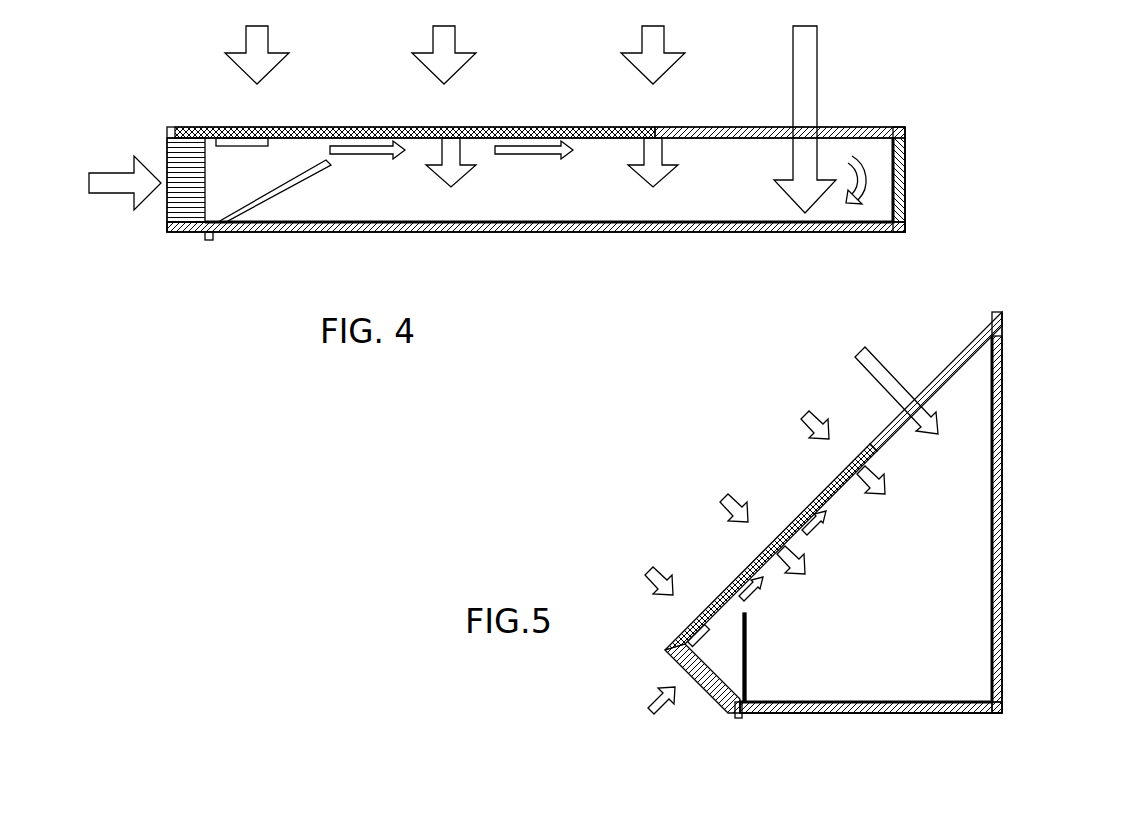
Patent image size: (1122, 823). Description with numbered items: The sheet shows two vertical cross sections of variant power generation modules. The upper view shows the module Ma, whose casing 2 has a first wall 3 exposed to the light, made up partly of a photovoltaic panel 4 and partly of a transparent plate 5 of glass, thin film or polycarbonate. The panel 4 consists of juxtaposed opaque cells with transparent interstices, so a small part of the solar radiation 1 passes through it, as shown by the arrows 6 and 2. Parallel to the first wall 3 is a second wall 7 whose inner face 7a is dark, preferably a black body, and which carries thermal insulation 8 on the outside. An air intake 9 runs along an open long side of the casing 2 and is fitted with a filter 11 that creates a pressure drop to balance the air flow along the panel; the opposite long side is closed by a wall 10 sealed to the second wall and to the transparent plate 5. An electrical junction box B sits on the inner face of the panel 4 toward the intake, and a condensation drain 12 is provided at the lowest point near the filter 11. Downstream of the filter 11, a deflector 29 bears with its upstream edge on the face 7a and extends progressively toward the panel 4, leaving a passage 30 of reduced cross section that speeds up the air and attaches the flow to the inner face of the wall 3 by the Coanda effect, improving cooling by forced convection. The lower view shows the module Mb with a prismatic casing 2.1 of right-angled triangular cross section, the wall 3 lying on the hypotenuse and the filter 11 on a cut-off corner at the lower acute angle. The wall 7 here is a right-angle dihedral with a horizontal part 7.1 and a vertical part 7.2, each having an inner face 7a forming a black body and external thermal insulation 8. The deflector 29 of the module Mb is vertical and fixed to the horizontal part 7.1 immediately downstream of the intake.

In FIG. 4, the solar radiation rays 1 is at (660, 42).
In FIG. 5, the solar radiation rays 1 is at (812, 418).
In FIG. 4, the casing 2 is at (684, 153).
In FIG. 5, the prismatic casing 2.1 is at (968, 402).
In FIG. 4, the first wall 3 is at (398, 120).
In FIG. 5, the first wall 3 is at (803, 507).
In FIG. 4, the photovoltaic panel 4 is at (577, 132).
In FIG. 5, the photovoltaic panel 4 is at (742, 572).
In FIG. 4, the transparent plate 5 is at (850, 130).
In FIG. 5, the transparent plate 5 is at (940, 364).
In FIG. 4, the arrows 6 is at (452, 150).
In FIG. 4, the second wall 7 is at (605, 233).
In FIG. 5, the second wall 7 is at (1012, 710).
In FIG. 5, the horizontal part 7.1 is at (916, 714).
In FIG. 5, the vertical part 7.2 is at (1005, 548).
In FIG. 4, the inner face 7a is at (518, 212).
In FIG. 5, the inner face 7a is at (990, 505).
In FIG. 4, the thermal insulation 8 is at (765, 233).
In FIG. 5, the thermal insulation 8 is at (1005, 622).
In FIG. 4, the air intake 9 is at (200, 190).
In FIG. 5, the air intake 9 is at (716, 708).
In FIG. 4, the wall 10 is at (908, 185).
In FIG. 4, the filter 11 is at (180, 155).
In FIG. 5, the filter 11 is at (668, 650).
In FIG. 4, the condensation drain 12 is at (210, 243).
In FIG. 5, the condensation drain 12 is at (742, 720).
In FIG. 4, the deflector 29 is at (272, 195).
In FIG. 5, the deflector 29 is at (748, 655).
In FIG. 4, the passage 30 is at (314, 147).
In FIG. 4, the electrical junction box B is at (232, 142).
In FIG. 5, the electrical junction box B is at (690, 628).
In FIG. 4, the module Ma is at (526, 88).
In FIG. 5, the module Mb is at (782, 446).